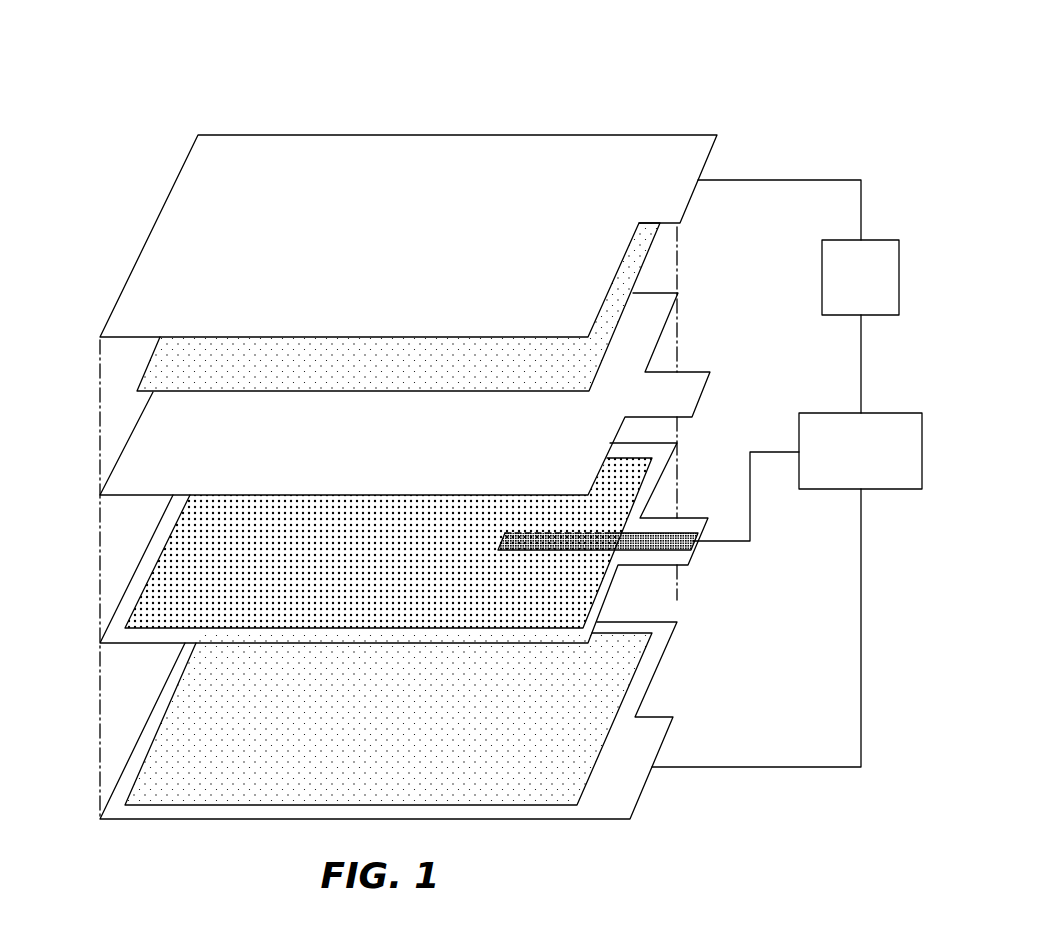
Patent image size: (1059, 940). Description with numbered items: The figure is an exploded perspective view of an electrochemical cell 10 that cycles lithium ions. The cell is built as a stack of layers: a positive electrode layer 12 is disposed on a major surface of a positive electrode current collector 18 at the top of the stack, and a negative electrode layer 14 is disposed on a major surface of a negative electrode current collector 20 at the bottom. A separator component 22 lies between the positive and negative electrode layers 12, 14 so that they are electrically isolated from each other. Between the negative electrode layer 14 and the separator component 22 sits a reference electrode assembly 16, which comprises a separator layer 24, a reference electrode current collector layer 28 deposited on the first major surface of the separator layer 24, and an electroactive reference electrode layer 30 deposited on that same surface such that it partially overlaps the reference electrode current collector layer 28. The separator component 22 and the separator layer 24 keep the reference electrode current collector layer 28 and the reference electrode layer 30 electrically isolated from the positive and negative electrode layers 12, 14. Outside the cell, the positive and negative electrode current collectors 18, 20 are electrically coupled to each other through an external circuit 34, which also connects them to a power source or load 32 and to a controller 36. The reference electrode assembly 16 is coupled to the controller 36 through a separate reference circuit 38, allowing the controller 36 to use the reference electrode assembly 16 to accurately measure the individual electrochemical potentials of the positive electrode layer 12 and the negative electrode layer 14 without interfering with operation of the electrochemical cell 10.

The electrochemical cell 10 is at (225, 113).
The positive electrode layer 12 is at (652, 248).
The negative electrode layer 14 is at (603, 748).
The reference electrode assembly 16 is at (126, 566).
The positive electrode current collector 18 is at (155, 224).
The negative electrode current collector 20 is at (157, 820).
The separator component 22 is at (120, 460).
The separator layer 24 is at (108, 623).
The reference electrode current collector layer 28 is at (502, 542).
The electroactive reference electrode layer 30 is at (163, 630).
The power source or load 32 is at (860, 326).
The external circuit 34 is at (836, 180).
The controller 36 is at (787, 590).
The reference circuit 38 is at (742, 545).